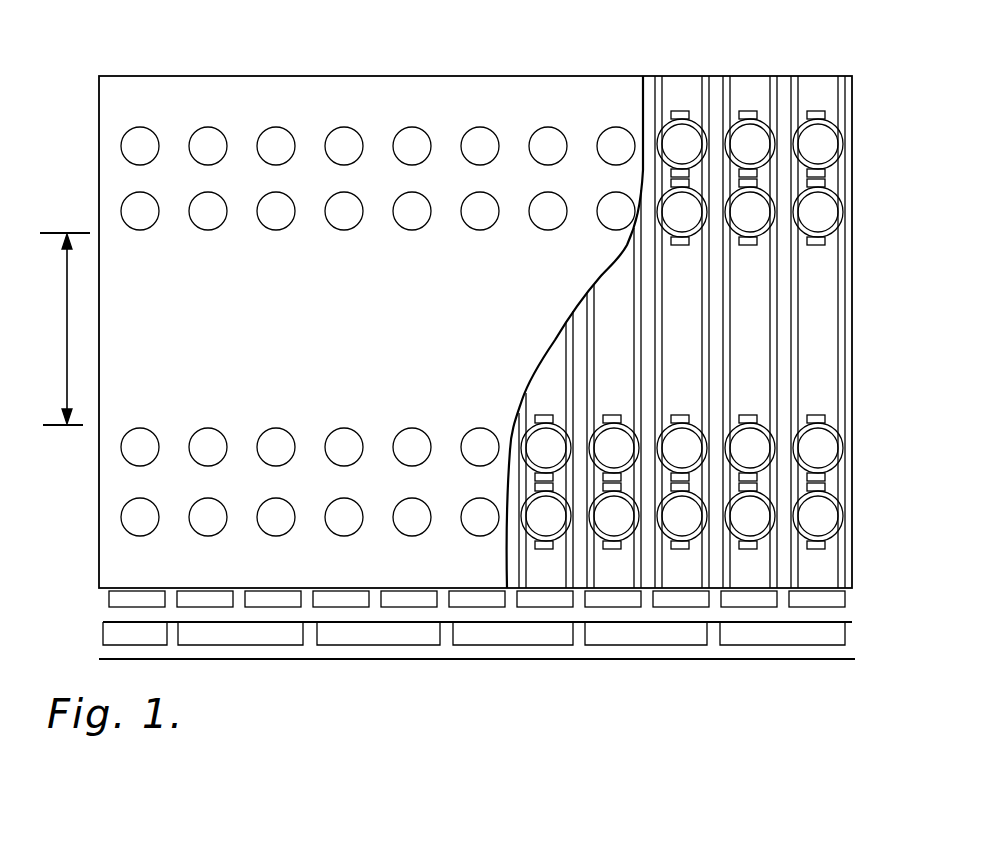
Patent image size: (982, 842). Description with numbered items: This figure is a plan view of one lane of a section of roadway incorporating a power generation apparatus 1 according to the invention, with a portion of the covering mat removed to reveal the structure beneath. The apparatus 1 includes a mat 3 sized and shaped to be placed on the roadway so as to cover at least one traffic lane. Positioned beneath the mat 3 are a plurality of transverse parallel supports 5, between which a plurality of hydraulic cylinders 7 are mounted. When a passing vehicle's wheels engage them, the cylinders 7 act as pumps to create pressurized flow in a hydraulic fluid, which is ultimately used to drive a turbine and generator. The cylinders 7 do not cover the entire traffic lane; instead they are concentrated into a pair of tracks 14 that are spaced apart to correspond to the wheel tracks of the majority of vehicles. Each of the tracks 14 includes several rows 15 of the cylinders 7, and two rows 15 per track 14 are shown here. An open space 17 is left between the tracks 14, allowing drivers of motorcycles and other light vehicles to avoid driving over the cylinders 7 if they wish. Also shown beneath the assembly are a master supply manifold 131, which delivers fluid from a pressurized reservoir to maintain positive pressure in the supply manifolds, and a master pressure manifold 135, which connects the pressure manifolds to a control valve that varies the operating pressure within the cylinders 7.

The power generation apparatus 1 is at (78, 61).
The mat 3 is at (313, 313).
The transverse parallel supports 5 is at (783, 74).
The hydraulic cylinder 7 is at (838, 188).
The track 14 is at (858, 427).
The row 15 is at (862, 118).
The open space 17 is at (66, 334).
The master supply manifold 131 is at (848, 613).
The master pressure manifold 135 is at (848, 657).